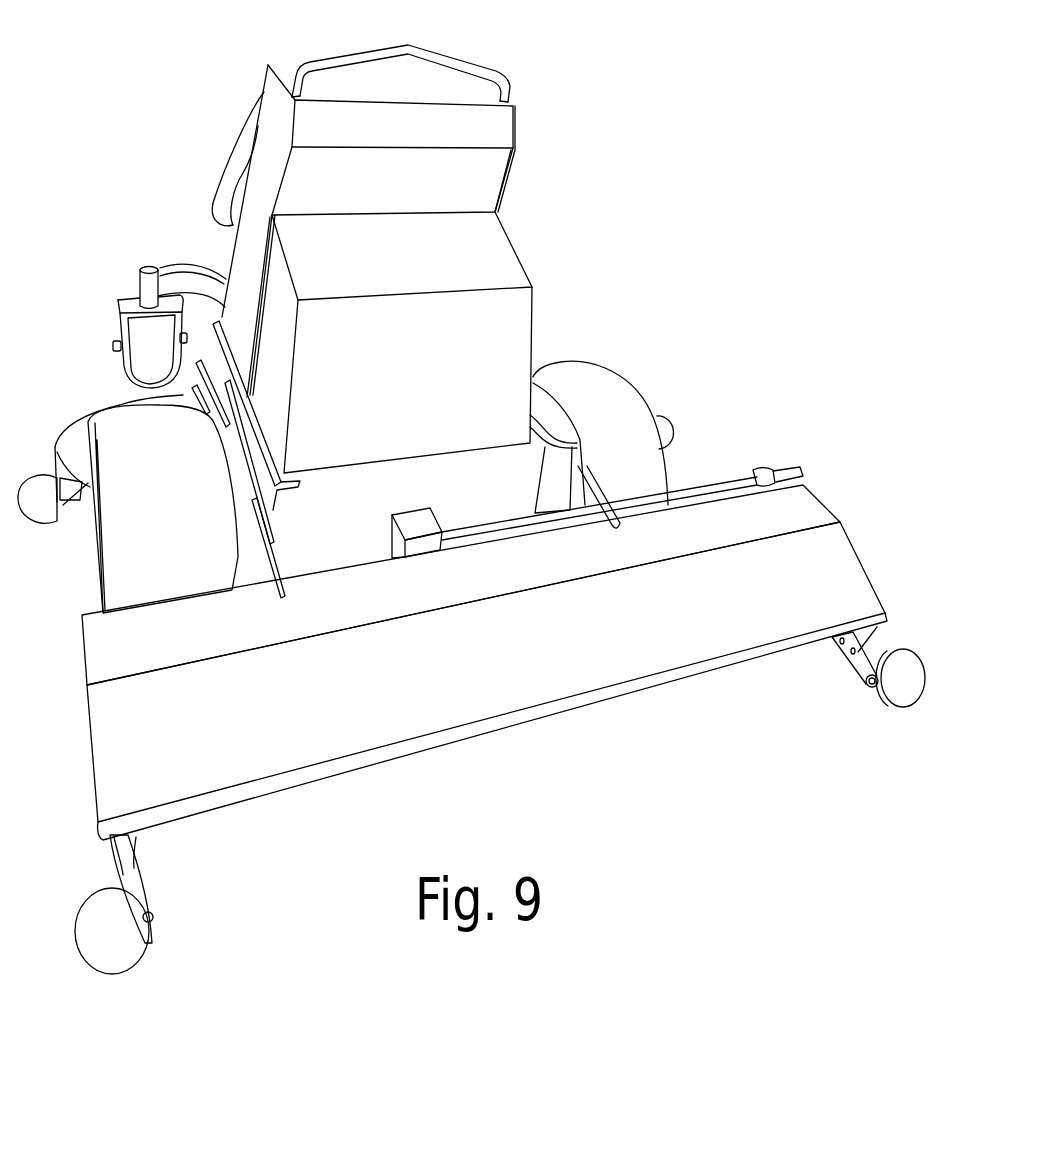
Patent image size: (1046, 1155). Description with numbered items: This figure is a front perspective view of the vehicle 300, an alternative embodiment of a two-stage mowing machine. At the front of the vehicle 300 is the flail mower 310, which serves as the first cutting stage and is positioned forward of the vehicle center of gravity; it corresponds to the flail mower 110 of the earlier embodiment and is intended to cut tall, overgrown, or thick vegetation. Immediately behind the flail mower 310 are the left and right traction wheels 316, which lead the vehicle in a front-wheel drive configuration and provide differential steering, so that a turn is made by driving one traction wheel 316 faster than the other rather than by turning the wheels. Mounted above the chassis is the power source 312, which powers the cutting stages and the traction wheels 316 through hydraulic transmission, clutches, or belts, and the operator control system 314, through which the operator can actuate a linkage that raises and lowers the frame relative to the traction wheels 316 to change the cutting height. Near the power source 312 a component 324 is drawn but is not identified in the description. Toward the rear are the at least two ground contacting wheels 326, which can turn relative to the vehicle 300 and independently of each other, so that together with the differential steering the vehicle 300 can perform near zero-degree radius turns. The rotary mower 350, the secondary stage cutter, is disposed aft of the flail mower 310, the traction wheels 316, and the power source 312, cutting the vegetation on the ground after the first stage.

The vehicle 300 is at (80, 228).
The flail mower 110 is at (58, 283).
The flail mower 310 is at (466, 684).
The power source 312 is at (533, 334).
The operator control system 314 is at (478, 62).
The left and right traction wheels 316 is at (93, 590).
The hose 324 is at (193, 267).
The ground contacting wheels 326 is at (127, 368).
The rotary mower 350 is at (56, 443).